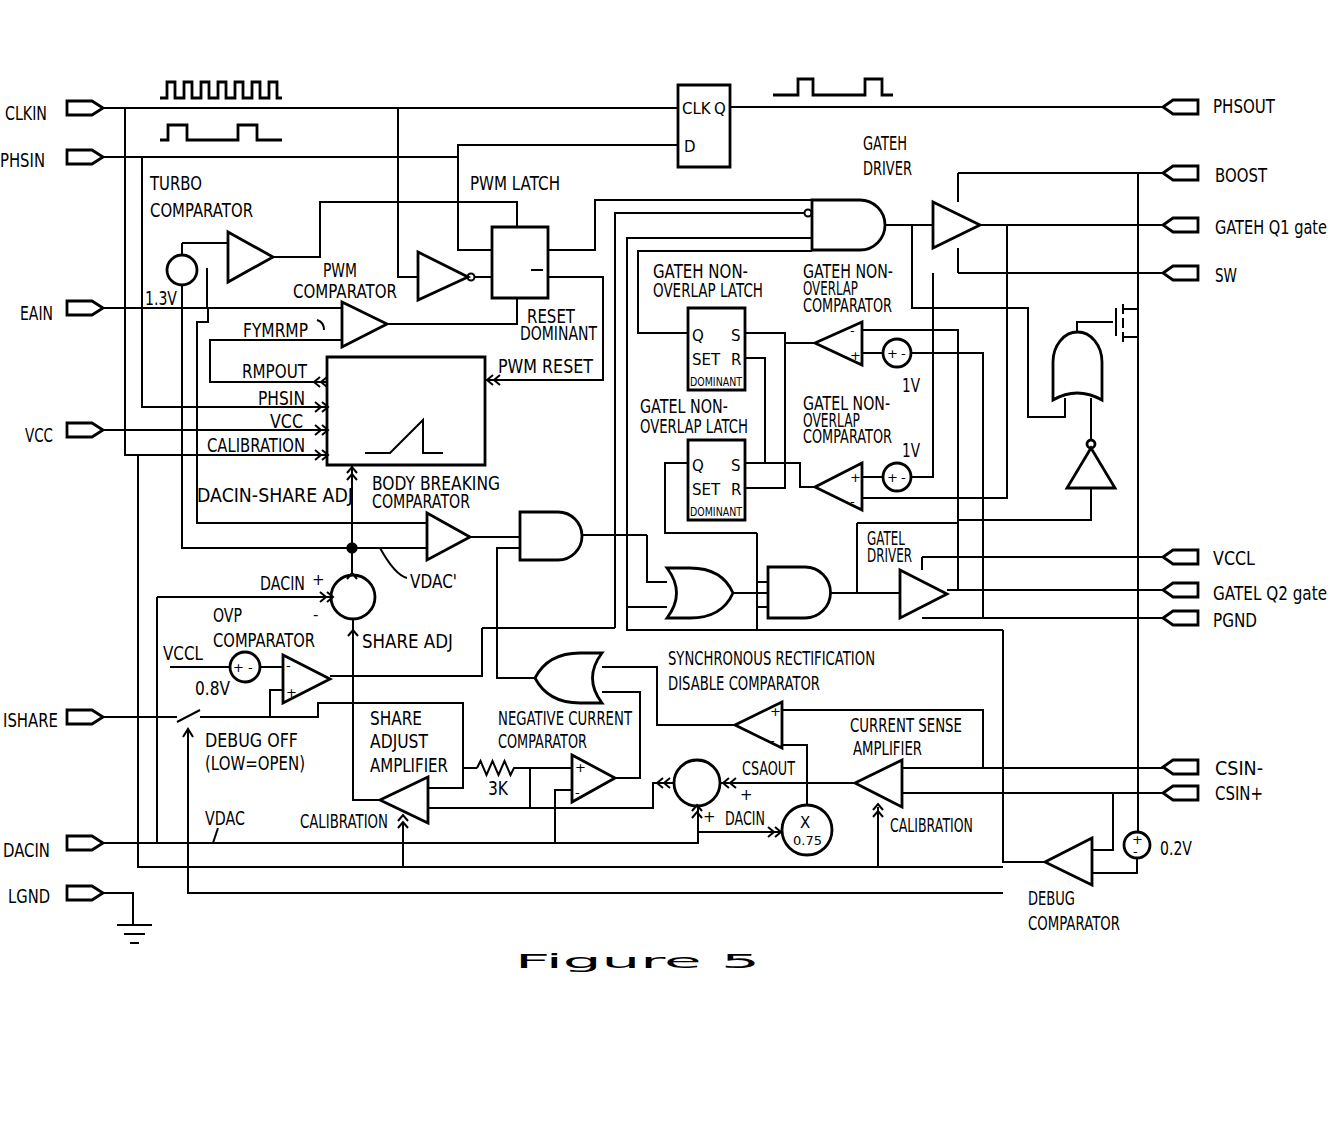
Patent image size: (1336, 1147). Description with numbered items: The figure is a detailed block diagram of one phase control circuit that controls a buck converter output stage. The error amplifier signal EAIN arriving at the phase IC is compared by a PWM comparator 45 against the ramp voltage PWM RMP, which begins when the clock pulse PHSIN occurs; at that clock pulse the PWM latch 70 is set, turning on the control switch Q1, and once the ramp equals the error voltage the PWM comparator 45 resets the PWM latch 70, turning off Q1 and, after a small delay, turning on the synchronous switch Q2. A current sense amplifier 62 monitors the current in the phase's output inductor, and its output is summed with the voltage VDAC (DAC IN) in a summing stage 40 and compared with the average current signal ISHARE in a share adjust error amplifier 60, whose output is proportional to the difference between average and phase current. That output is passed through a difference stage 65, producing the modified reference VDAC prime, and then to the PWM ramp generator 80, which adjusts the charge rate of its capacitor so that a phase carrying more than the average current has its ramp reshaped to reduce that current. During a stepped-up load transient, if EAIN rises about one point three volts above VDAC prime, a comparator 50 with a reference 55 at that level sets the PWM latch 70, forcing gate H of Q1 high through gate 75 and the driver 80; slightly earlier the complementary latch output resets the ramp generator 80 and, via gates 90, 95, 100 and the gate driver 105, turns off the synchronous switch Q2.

The summing stage 40 is at (695, 760).
The PWM comparator 45 is at (377, 333).
The comparator 50 is at (237, 279).
The reference voltage 55 is at (171, 260).
The share adjust error amplifier 60 is at (432, 822).
The current sense amplifier 62 is at (870, 792).
The difference stage 65 is at (375, 603).
The PWM latch 70 is at (552, 234).
The gate 75 is at (826, 200).
The PWM ramp generator 80 is at (443, 357).
The gate 90 is at (556, 512).
The gate 95 is at (690, 567).
The gate 100 is at (808, 567).
The gate driver 105 is at (900, 607).